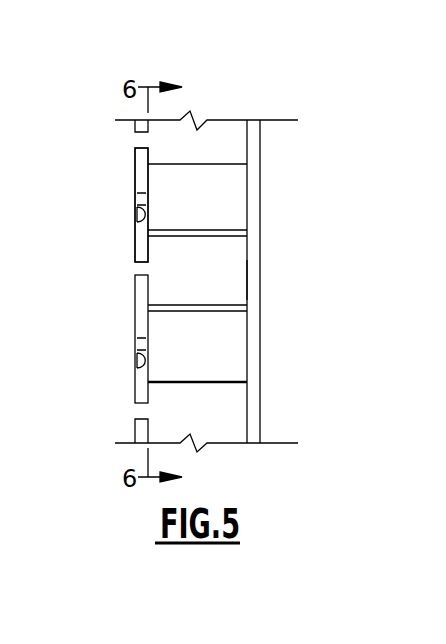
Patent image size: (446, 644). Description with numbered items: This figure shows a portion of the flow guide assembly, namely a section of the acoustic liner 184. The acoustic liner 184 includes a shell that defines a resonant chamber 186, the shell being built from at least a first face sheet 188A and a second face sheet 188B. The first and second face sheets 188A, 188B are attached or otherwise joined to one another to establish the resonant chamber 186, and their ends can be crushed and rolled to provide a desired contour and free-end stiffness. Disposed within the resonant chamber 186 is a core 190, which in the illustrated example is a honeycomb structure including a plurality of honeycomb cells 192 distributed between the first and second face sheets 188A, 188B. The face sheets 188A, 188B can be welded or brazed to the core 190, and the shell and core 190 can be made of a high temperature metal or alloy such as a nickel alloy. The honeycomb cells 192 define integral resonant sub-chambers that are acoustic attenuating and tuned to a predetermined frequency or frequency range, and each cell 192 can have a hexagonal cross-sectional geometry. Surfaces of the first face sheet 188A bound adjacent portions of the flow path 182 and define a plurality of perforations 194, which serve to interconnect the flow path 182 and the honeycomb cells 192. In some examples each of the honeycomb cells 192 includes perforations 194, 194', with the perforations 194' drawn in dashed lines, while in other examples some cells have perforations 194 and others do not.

The flow path 182 is at (113, 338).
The acoustic liner 184 is at (80, 121).
The resonant chamber 186 is at (250, 276).
The first face sheet 188A is at (135, 174).
The second face sheet 188B is at (260, 168).
The core 190 is at (233, 118).
The honeycomb cells 192 is at (237, 252).
The perforations 194 is at (107, 271).
The perforations 194' is at (100, 289).